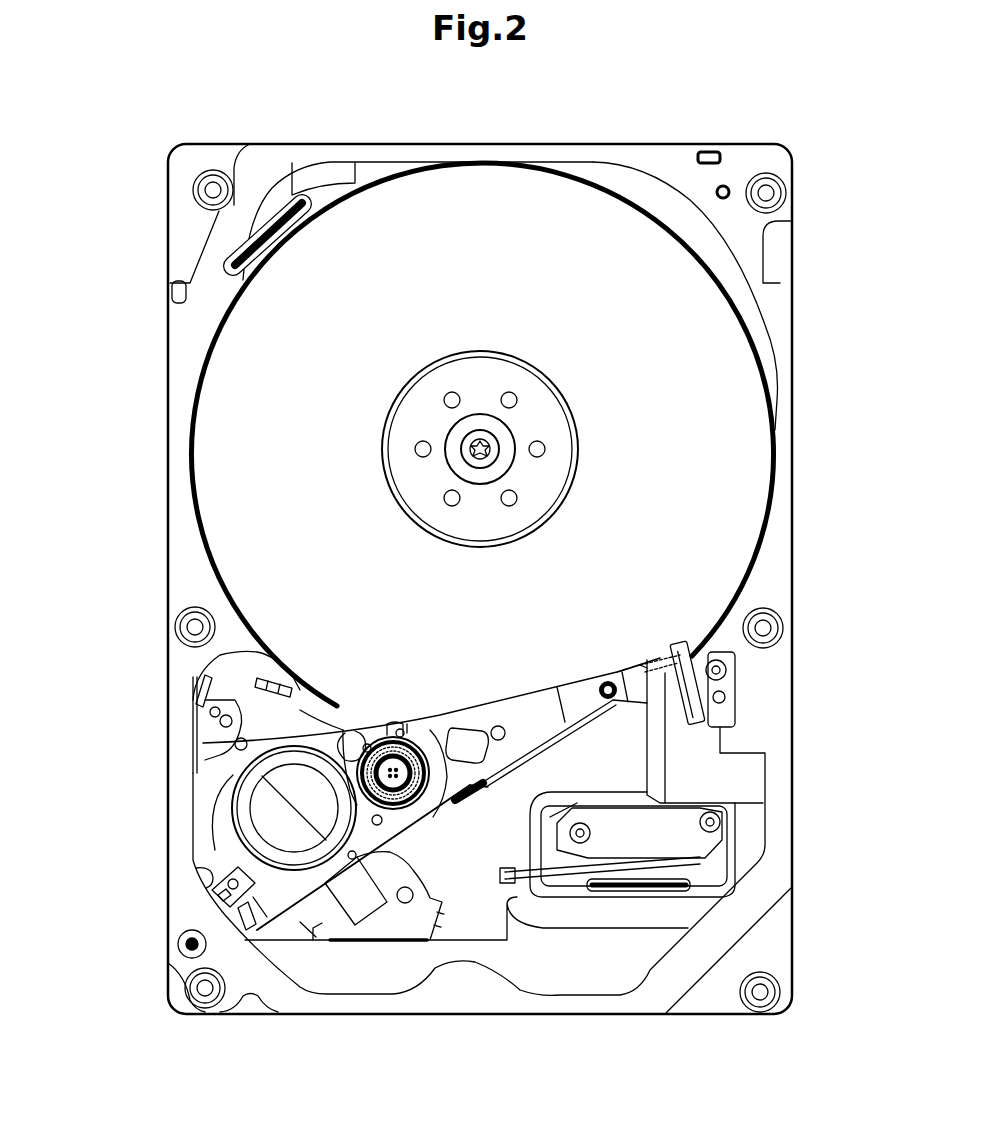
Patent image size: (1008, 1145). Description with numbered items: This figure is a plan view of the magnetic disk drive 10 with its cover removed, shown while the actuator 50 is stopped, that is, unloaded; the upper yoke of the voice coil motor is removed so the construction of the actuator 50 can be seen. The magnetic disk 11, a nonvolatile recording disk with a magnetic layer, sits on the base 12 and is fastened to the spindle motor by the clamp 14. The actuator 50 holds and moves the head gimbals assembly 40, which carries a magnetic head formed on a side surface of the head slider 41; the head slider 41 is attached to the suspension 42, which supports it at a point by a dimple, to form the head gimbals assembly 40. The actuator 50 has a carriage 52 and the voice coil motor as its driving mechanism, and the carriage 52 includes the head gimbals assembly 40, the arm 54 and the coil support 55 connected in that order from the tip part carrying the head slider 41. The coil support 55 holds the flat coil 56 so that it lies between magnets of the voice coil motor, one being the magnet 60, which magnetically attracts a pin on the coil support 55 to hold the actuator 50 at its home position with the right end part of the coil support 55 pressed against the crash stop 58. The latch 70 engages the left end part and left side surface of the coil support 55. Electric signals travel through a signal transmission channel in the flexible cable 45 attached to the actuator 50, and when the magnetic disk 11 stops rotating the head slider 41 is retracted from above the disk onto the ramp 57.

The magnetic disk drive 10 is at (465, 115).
The magnetic disk 11 is at (733, 423).
The base 12 is at (190, 327).
The clamp 14 is at (491, 378).
The head gimbals assembly 40 is at (664, 712).
The head slider 41 is at (679, 640).
The suspension 42 is at (647, 662).
The flexible cable 45 is at (427, 858).
The actuator 50 is at (439, 703).
The carriage 52 is at (350, 727).
The arm 54 is at (517, 713).
The coil support 55 is at (300, 710).
The flat coil 56 is at (237, 807).
The ramp 57 is at (717, 707).
The crash stop 58 is at (237, 867).
The magnet 60 is at (355, 895).
The latch 70 is at (193, 700).